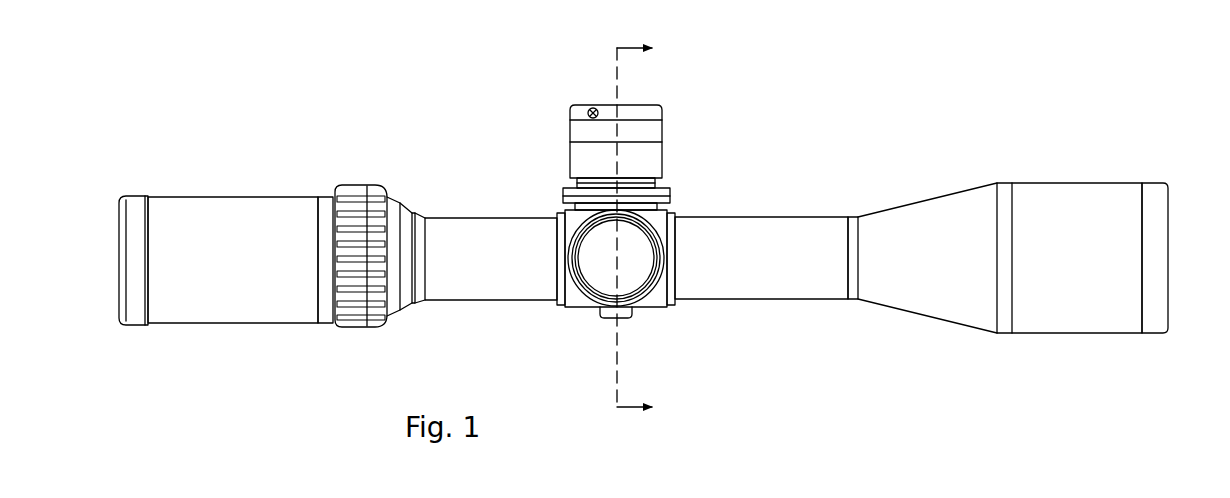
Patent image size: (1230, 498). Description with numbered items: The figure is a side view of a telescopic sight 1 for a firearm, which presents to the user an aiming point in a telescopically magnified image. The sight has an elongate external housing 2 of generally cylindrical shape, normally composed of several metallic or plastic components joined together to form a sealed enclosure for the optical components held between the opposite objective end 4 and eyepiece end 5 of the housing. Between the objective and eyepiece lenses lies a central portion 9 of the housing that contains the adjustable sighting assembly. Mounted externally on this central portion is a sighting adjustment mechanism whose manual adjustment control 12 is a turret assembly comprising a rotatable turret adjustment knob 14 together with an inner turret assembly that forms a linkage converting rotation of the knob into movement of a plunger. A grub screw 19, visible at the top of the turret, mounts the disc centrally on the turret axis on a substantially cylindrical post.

The telescopic sight 1 is at (198, 115).
The external housing 2 is at (937, 193).
The objective end 4 is at (1171, 192).
The eyepiece end 5 is at (117, 209).
The central portion 9 is at (563, 207).
The manual adjustment control 12 is at (566, 137).
The turret adjustment knob 14 is at (656, 221).
The grub screw 19 is at (590, 107).